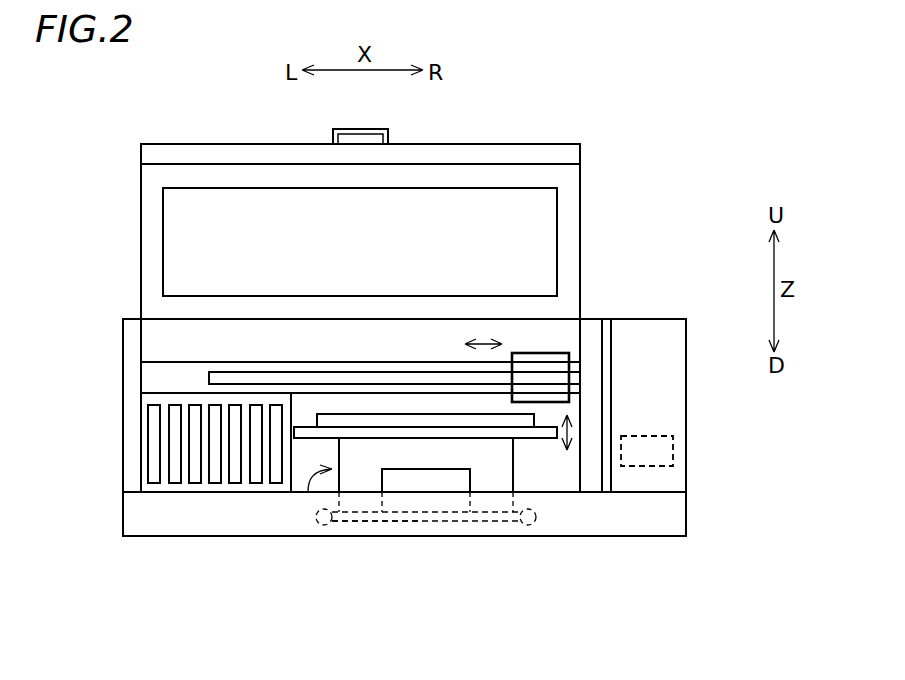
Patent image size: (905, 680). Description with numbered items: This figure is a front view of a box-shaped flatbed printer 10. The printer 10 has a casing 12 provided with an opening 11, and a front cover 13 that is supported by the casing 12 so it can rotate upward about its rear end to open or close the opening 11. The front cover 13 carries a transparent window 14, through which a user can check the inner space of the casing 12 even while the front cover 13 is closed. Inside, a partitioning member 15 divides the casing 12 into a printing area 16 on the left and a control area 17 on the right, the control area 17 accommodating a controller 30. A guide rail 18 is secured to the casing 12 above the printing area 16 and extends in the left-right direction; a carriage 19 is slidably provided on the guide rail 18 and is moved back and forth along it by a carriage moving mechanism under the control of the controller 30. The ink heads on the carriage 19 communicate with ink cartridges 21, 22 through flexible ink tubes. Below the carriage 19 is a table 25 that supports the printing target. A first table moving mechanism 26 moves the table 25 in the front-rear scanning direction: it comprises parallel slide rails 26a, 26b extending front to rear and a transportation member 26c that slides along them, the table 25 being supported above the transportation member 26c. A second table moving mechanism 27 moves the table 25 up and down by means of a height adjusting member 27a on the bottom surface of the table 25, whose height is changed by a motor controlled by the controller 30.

The printer 10 is at (626, 128).
The opening 11 is at (580, 478).
The casing 12 is at (683, 300).
The front cover 13 is at (141, 228).
The window 14 is at (495, 206).
The partitioning member 15 is at (607, 492).
The printing area 16 is at (306, 486).
The control area 17 is at (647, 483).
The guide rail 18 is at (233, 372).
The carriage 19 is at (543, 353).
The ink cartridge 21 is at (154, 483).
The ink cartridge 22 is at (235, 483).
The table 25 is at (537, 438).
The first table moving mechanism 26 is at (422, 523).
The slide rail 26a is at (324, 525).
The slide rail 26b is at (535, 523).
The transportation member 26c is at (388, 523).
The second table moving mechanism 27 is at (308, 492).
The height adjusting member 27a is at (513, 478).
The controller 30 is at (673, 449).